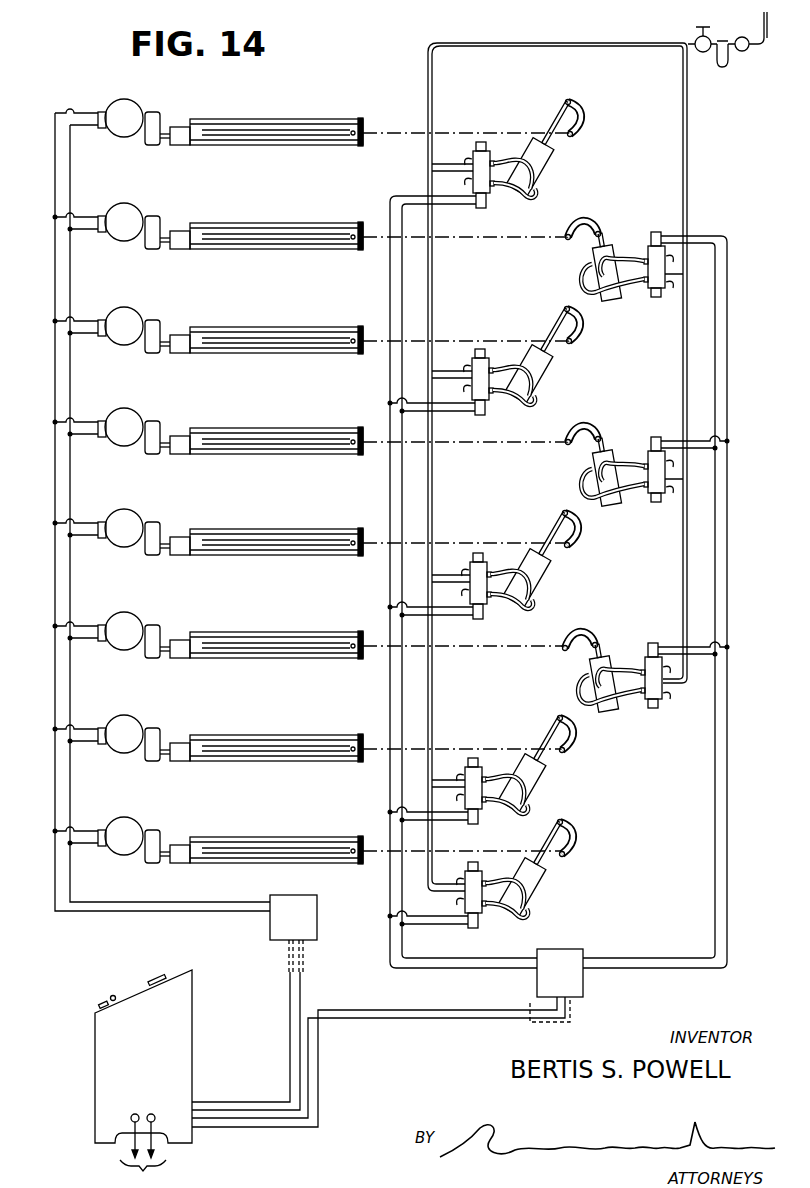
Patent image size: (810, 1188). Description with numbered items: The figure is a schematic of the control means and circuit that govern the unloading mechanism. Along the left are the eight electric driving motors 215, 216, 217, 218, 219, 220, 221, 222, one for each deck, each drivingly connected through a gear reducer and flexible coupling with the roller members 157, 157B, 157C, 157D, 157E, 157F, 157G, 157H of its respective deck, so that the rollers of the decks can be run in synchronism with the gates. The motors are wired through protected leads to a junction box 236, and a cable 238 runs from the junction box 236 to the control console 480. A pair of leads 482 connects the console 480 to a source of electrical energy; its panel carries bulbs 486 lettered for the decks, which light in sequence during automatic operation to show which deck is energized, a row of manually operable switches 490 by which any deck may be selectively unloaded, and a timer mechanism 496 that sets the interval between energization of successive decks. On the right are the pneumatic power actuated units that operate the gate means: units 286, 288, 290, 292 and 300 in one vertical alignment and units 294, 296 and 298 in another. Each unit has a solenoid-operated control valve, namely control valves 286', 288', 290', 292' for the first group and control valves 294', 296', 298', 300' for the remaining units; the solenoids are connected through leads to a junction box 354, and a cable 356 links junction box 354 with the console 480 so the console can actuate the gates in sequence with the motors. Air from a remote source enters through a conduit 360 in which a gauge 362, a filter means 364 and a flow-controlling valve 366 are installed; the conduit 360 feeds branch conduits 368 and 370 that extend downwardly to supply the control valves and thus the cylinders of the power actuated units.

The roller members 157 is at (185, 146).
The roller member of deck B 157B is at (185, 250).
The roller member of deck C 157C is at (185, 354).
The roller member of deck D 157D is at (185, 455).
The roller member of deck E 157E is at (185, 556).
The roller member of deck F 157F is at (185, 659).
The roller member of deck G 157G is at (185, 762).
The roller member of deck H 157H is at (185, 864).
The driving motor 215 is at (141, 105).
The driving motor 216 is at (141, 209).
The driving motor 217 is at (141, 313).
The driving motor 218 is at (141, 414).
The driving motor 219 is at (141, 515).
The driving motor 220 is at (141, 618).
The driving motor 221 is at (141, 721).
The driving motor 222 is at (141, 823).
The junction box 236 is at (316, 920).
The cable 238 is at (290, 961).
The power actuated means 286 is at (559, 147).
The control valve 286' is at (479, 153).
The power actuated means 288 is at (558, 354).
The control valve 288' is at (479, 360).
The power actuated means 290 is at (561, 558).
The control valve 290' is at (476, 564).
The power actuated means 292 is at (559, 763).
The control valve 292' is at (466, 768).
The power actuated means 294 is at (609, 245).
The control valve 294' is at (645, 290).
The power actuated means 296 is at (609, 451).
The control valve 296' is at (645, 495).
The power actuated means 298 is at (608, 653).
The control valve 298' is at (673, 703).
The power actuated means 300 is at (559, 867).
The control valve 300' is at (506, 905).
The junction box 354 is at (583, 980).
The cable 356 is at (530, 1003).
The conduit 360 is at (764, 40).
The gauge 362 is at (743, 52).
The filter means 364 is at (720, 68).
The valve 366 is at (695, 42).
The branch conduit 368 is at (688, 124).
The branch conduit 370 is at (432, 76).
The control console 480 is at (170, 1055).
The leads 482 is at (152, 1143).
The bulbs 486 is at (114, 995).
The manually operable switches 490 is at (101, 1003).
The timer mechanism 496 is at (152, 977).